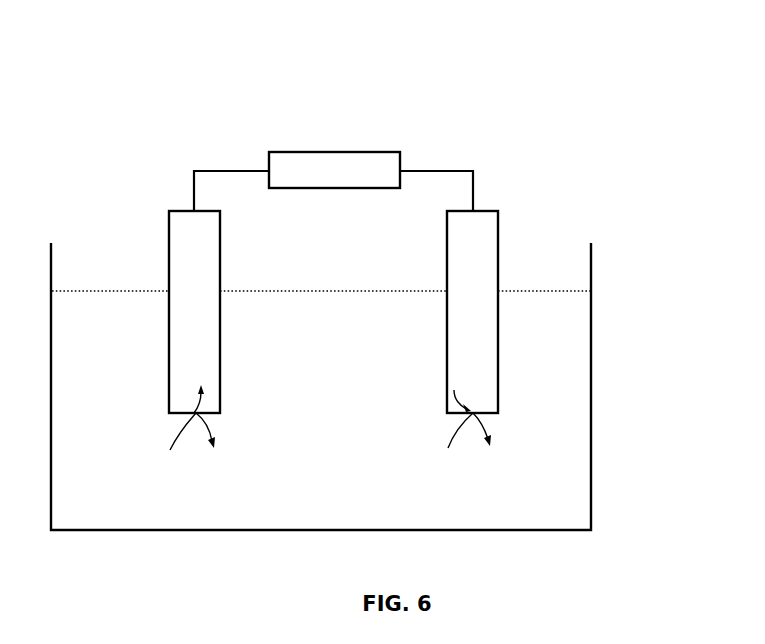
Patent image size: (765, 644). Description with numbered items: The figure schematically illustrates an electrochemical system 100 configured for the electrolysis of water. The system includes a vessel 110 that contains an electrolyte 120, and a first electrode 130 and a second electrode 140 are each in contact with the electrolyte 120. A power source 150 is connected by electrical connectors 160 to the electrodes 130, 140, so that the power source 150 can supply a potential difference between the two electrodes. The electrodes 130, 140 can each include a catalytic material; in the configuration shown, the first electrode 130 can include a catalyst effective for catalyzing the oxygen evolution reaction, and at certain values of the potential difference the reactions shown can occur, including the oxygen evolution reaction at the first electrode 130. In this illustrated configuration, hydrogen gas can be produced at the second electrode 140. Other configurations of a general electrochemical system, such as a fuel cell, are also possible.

The electrochemical system 100 is at (436, 90).
The vessel 110 is at (592, 350).
The electrolyte 120 is at (321, 327).
The first electrode 130 is at (189, 263).
The second electrode 140 is at (462, 263).
The power source 150 is at (329, 170).
The electrical connectors 160 is at (251, 170).